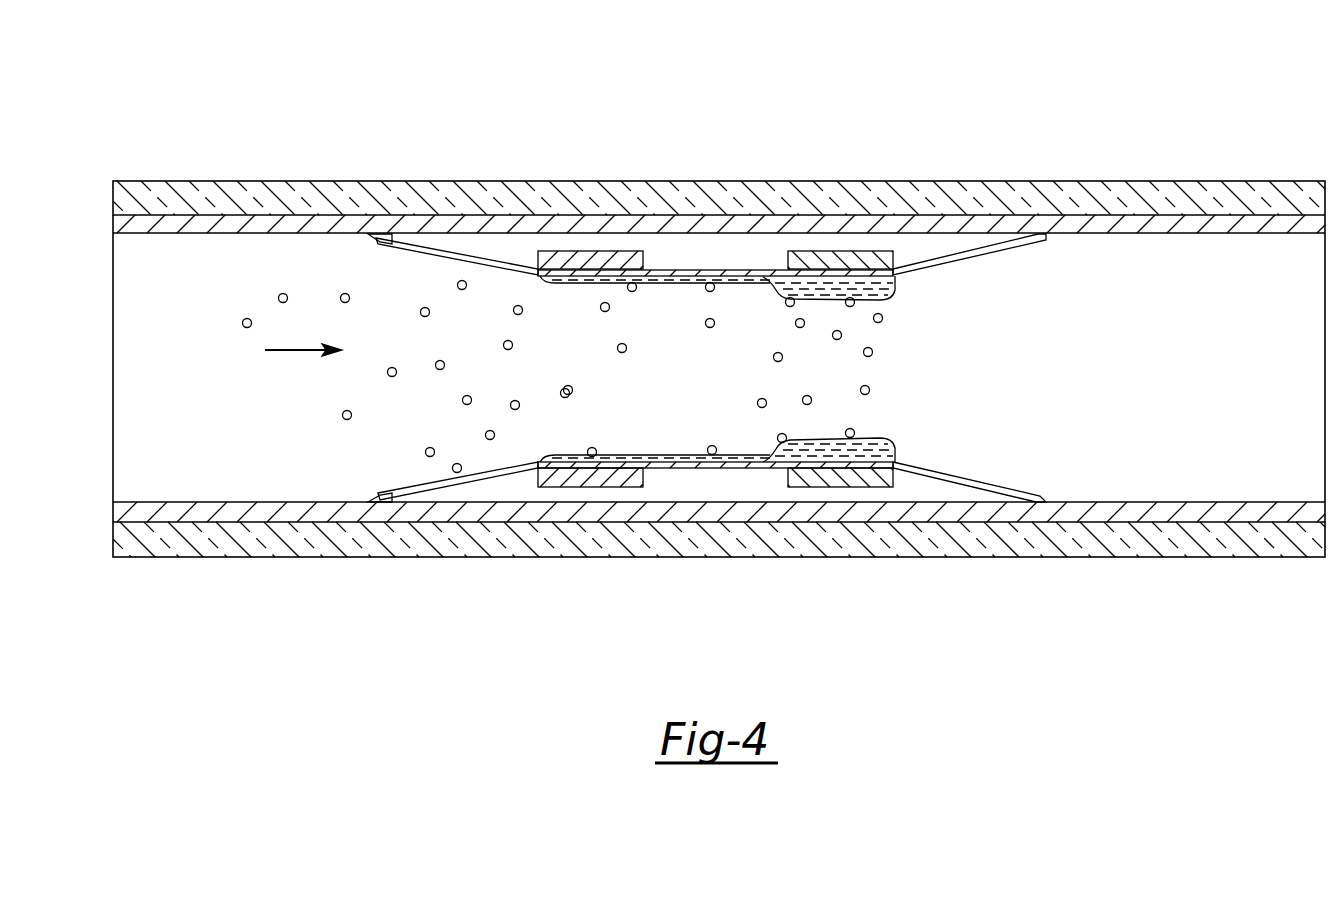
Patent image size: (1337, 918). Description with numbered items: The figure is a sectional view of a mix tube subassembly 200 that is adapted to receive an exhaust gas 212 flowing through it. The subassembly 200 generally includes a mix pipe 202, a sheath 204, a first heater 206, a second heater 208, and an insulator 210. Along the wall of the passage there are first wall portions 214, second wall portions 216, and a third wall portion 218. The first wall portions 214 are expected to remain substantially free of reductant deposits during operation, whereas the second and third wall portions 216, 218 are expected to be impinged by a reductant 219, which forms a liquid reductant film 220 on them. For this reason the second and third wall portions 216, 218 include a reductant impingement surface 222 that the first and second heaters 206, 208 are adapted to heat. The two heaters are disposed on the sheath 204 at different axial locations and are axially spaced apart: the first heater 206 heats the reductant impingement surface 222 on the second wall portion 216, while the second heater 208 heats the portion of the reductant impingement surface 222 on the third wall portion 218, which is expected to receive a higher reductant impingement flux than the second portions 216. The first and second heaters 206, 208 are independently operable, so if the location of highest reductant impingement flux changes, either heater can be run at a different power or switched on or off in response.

The mix tube subassembly 200 is at (1186, 70).
The mix pipe 202 is at (297, 223).
The sheath 204 is at (504, 262).
The first heater 206 is at (598, 266).
The second heater 208 is at (830, 266).
The insulator 210 is at (1116, 205).
The exhaust gas 212 is at (285, 352).
The first wall portion 214 is at (538, 450).
The second wall portion 216 is at (772, 450).
The third wall portion 218 is at (893, 430).
The reductant 219 is at (244, 320).
The liquid reductant film 220 is at (752, 283).
The reductant impingement surface 222 is at (663, 277).